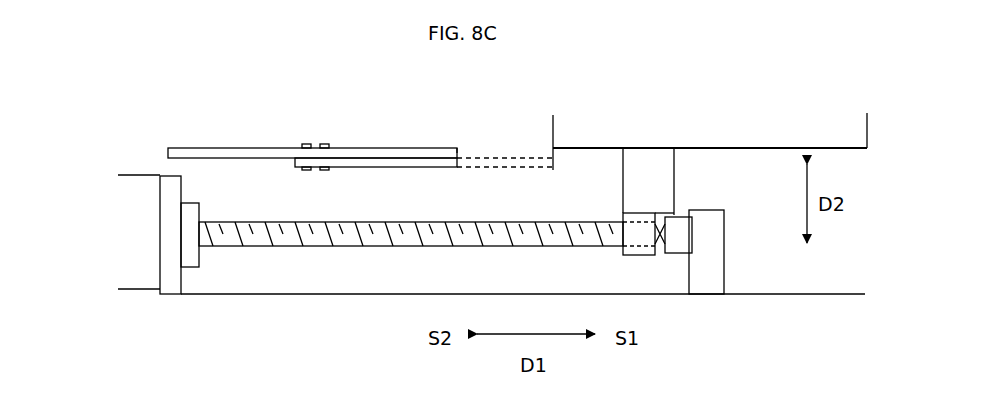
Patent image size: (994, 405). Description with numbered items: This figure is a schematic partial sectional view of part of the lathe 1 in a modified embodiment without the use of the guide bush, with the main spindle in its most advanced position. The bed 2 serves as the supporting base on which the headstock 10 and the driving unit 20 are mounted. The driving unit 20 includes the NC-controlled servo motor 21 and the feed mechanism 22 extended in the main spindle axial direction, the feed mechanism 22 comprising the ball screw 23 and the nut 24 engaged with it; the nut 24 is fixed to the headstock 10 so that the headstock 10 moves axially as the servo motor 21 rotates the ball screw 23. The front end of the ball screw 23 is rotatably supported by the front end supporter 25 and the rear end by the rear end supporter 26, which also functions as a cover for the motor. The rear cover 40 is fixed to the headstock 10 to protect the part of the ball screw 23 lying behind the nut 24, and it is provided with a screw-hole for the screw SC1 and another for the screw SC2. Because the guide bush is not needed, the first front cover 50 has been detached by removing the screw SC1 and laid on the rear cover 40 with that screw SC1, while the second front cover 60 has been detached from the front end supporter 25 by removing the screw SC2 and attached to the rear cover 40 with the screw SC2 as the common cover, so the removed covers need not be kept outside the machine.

The lathe 1 is at (158, 114).
The headstock 10 is at (612, 128).
The bed 2 is at (775, 294).
The driving unit 20 is at (142, 304).
The servo motor 21 is at (130, 175).
The feed mechanism 22 is at (370, 270).
The ball screw 23 is at (407, 246).
The nut 24 is at (641, 255).
The front end supporter 25 is at (708, 210).
The rear end supporter 26 is at (174, 292).
The rear cover 40 is at (378, 158).
The first front cover 50 is at (460, 158).
The second front cover 60 is at (247, 158).
The screw SC1 is at (323, 144).
The screw SC2 is at (305, 144).